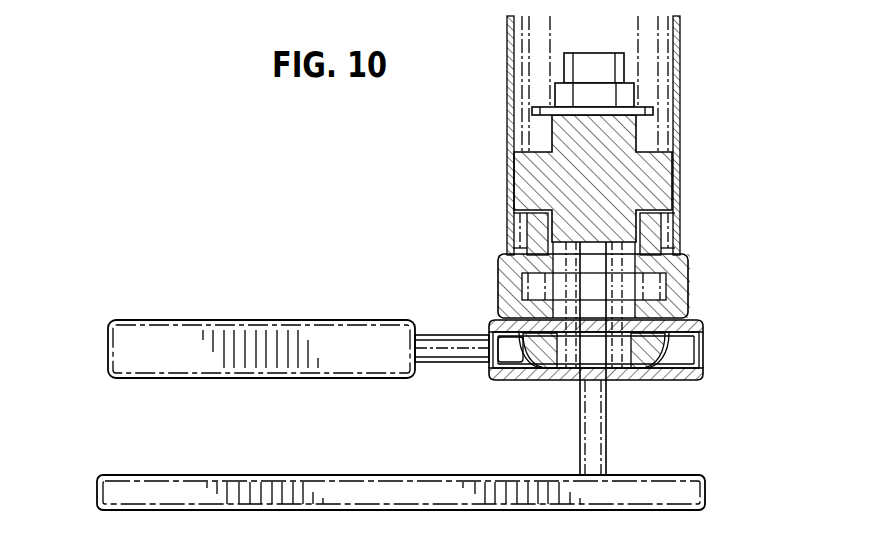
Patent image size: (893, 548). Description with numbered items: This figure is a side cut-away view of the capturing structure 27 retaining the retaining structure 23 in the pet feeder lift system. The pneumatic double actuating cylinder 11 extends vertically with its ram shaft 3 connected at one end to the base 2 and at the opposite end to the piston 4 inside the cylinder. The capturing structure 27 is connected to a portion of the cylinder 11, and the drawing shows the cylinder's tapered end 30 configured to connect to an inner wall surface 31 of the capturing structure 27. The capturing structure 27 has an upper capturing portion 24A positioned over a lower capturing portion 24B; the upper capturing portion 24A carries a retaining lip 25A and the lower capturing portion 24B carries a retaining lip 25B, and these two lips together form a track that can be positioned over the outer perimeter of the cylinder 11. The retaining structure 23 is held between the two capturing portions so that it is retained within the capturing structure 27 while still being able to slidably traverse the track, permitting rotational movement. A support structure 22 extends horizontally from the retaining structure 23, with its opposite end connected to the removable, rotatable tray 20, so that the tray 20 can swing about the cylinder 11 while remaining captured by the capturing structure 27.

The base 2 is at (706, 492).
The ram shaft 3 is at (606, 428).
The piston 4 is at (665, 177).
The pneumatic double actuating cylinder 11 is at (507, 72).
The rotatable tray 20 is at (108, 344).
The support structure 22 is at (463, 347).
The retaining structure 23 is at (505, 358).
The upper capturing portion 24A is at (696, 318).
The lower capturing portion 24B is at (681, 380).
The retaining lip 25A is at (687, 335).
The retaining lip 25B is at (692, 360).
The capturing structure 27 is at (483, 317).
The tapered end 30 is at (552, 360).
The inner wall surface 31 is at (538, 368).